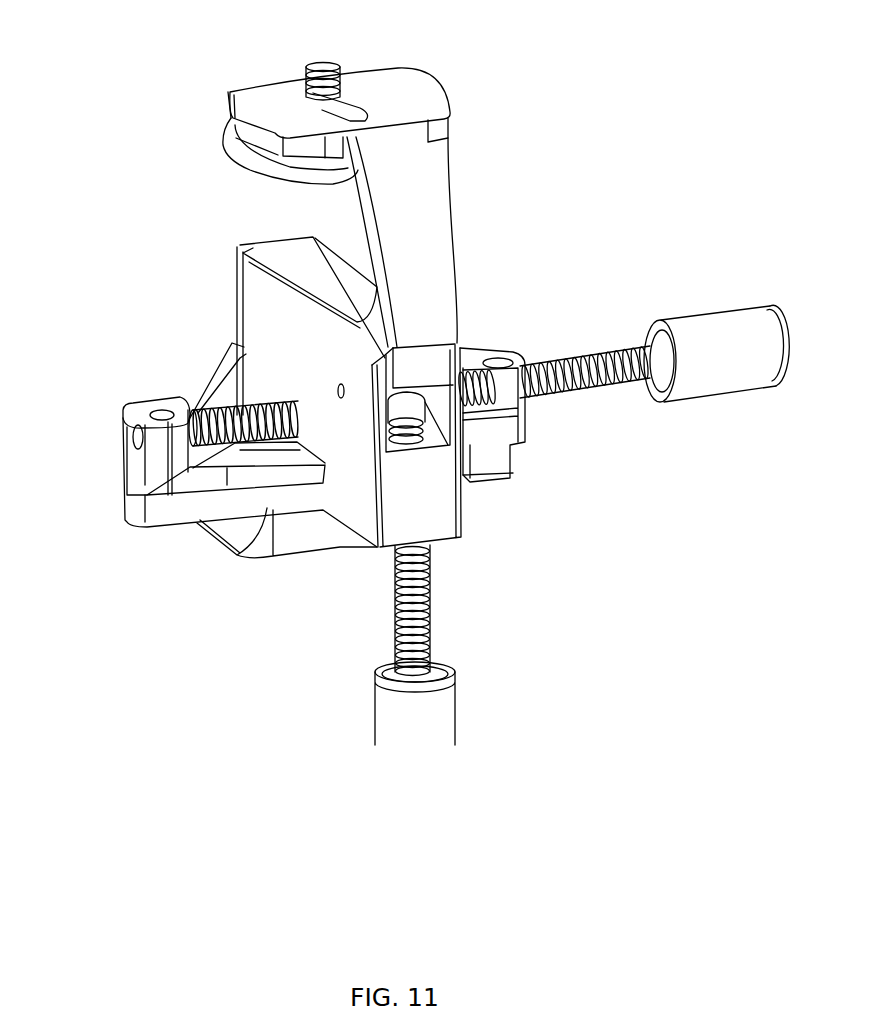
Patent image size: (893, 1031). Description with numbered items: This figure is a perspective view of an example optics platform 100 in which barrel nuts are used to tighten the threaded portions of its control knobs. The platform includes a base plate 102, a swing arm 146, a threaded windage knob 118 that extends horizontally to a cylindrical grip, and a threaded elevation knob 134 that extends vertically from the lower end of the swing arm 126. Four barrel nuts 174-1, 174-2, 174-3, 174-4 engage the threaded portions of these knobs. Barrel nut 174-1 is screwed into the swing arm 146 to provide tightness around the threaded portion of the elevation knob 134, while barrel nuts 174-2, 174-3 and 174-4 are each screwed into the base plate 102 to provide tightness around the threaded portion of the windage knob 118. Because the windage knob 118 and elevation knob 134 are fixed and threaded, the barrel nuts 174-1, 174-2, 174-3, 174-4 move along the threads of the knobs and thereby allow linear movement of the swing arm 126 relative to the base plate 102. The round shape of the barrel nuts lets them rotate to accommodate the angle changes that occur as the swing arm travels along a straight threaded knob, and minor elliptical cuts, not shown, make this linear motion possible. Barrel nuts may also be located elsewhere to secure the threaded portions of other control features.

The optics platform 100 is at (143, 62).
The base plate 102 is at (173, 527).
The windage knob 118 is at (687, 318).
The swing arm 126 is at (463, 517).
The elevation knob 134 is at (455, 703).
The swing arm 146 is at (450, 220).
The barrel nut 174-1 is at (340, 388).
The barrel nut 174-2 is at (162, 412).
The barrel nut 174-3 is at (138, 448).
The barrel nut 174-4 is at (503, 357).